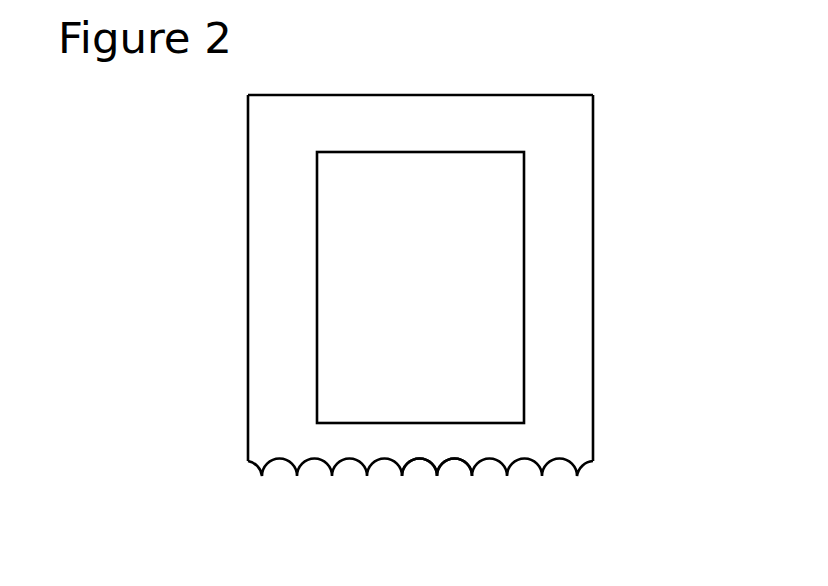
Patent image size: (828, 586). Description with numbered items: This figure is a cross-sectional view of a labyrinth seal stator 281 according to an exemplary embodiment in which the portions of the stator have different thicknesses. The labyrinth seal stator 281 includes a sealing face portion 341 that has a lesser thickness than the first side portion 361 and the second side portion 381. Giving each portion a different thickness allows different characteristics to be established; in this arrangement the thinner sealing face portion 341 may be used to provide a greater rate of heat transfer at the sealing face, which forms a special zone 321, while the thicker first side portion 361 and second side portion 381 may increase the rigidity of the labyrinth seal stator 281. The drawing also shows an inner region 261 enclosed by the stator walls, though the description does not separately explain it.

The inner window region 261 is at (345, 224).
The labyrinth seal stator 281 is at (611, 206).
The special zone 321 is at (397, 484).
The sealing face portion 341 is at (437, 477).
The first side portion 361 is at (248, 309).
The second side portion 381 is at (593, 323).